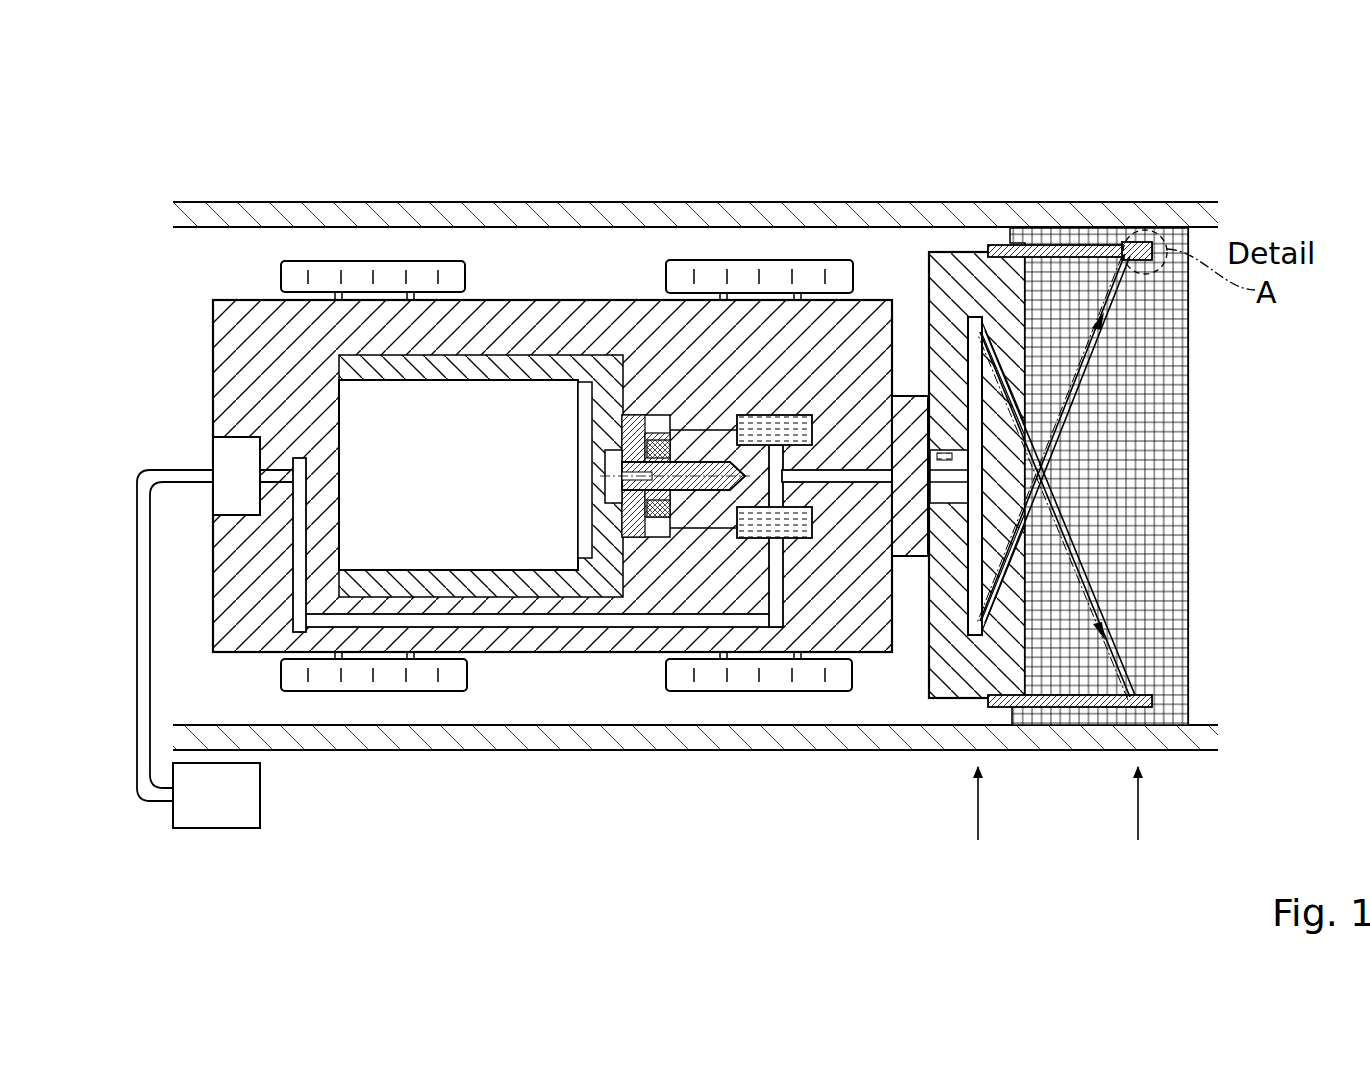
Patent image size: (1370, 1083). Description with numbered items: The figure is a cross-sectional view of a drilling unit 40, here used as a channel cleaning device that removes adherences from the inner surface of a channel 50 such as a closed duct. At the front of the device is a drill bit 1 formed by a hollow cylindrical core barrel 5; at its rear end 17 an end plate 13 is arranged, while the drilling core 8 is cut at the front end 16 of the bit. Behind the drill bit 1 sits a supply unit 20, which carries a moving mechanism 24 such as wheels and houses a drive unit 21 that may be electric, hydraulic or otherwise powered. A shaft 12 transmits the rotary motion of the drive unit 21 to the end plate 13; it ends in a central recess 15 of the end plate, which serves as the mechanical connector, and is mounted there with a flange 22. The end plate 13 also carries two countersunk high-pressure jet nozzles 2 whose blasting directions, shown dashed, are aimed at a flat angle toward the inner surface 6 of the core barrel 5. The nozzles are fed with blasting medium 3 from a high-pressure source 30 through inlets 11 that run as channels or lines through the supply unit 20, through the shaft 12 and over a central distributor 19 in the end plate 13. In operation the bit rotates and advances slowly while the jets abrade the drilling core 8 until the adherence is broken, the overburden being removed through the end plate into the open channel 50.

The drill bit 1 is at (1097, 216).
The jet nozzles 2 is at (1023, 420).
The blasting medium 3 is at (1088, 600).
The core barrel 5 is at (1038, 700).
The inner surface 6 is at (1062, 258).
The drilling core 8 is at (1099, 476).
The inlets 11 is at (298, 568).
The shaft 12 is at (840, 448).
The end plate 13 is at (953, 655).
The central recess 15 is at (942, 450).
The front end 16 is at (1138, 822).
The rear end 17 is at (978, 822).
The central distributor 19 is at (905, 558).
The supply unit 20 is at (564, 269).
The drive unit 21 is at (465, 475).
The flange 22 is at (902, 402).
The moving mechanism 24 is at (741, 271).
The high-pressure source 30 is at (198, 649).
The drilling unit 40 is at (766, 145).
The channel 50 is at (386, 215).